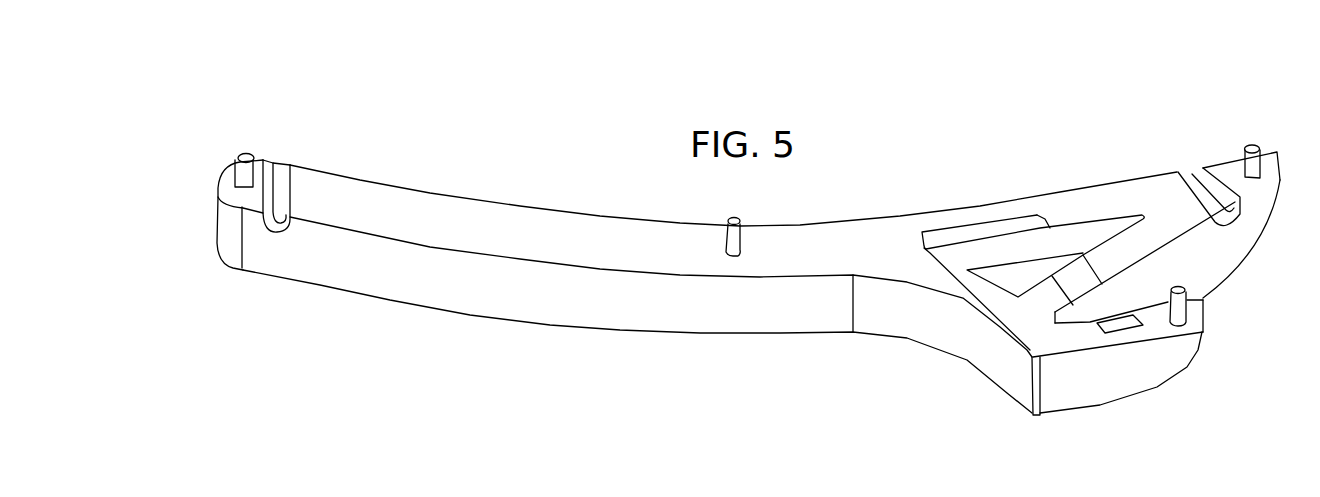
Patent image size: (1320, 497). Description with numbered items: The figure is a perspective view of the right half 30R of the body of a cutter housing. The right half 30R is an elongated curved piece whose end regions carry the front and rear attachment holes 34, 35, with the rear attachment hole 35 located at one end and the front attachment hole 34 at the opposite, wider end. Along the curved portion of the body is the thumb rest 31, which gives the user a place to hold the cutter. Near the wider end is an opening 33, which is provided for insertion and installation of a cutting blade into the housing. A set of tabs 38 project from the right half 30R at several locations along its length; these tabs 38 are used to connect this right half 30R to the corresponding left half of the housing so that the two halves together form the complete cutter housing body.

The right half of the cutter housing body 30R is at (548, 173).
The thumb rest 31 is at (950, 330).
The opening 33 is at (993, 233).
The front attachment hole 34 is at (1203, 178).
The rear attachment hole 35 is at (273, 177).
The tabs 38 is at (245, 152).